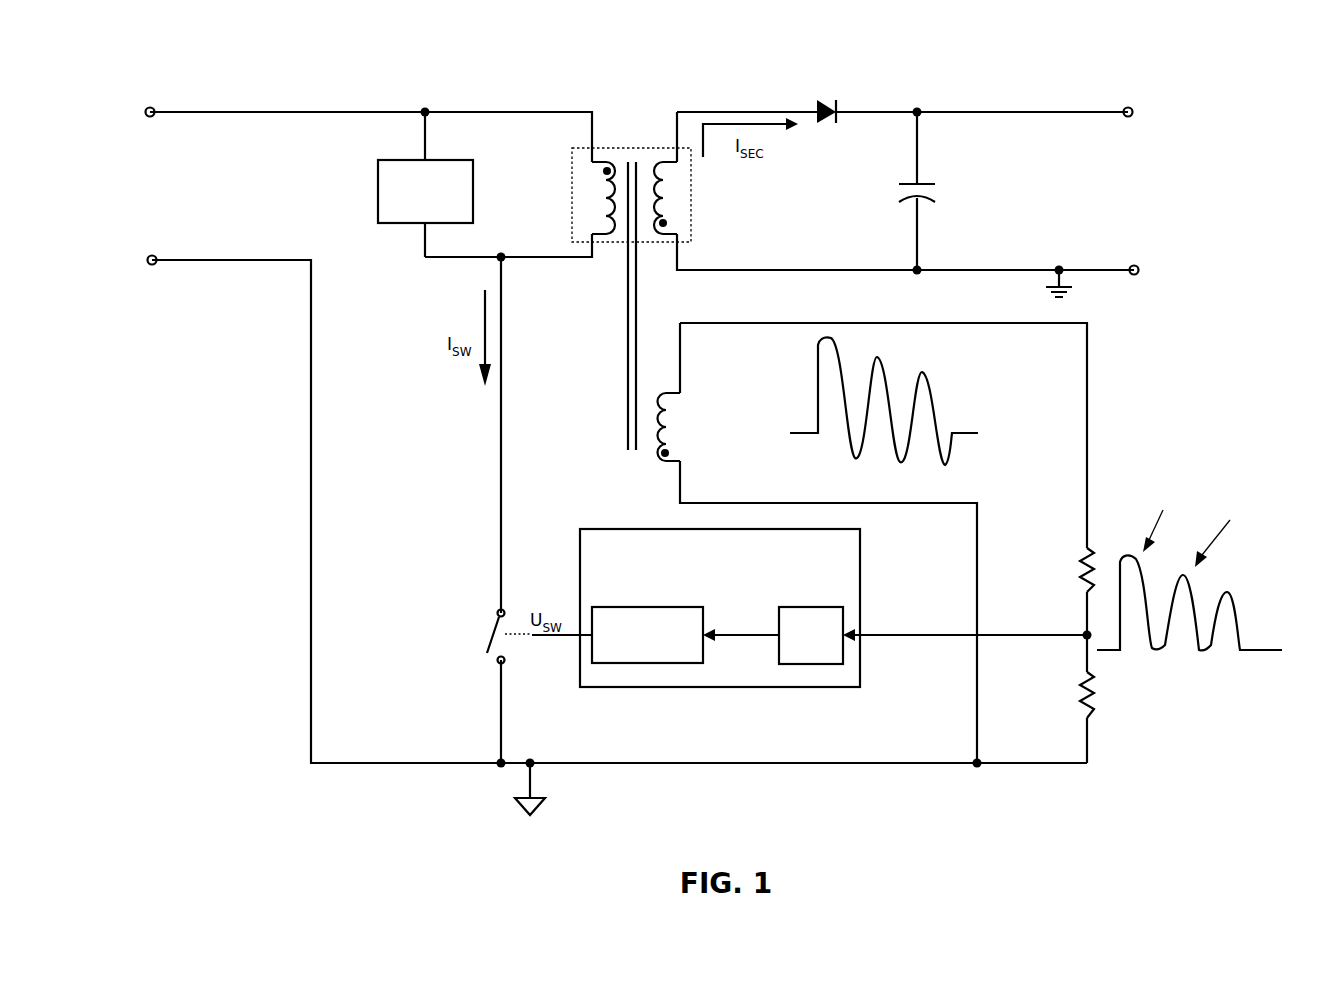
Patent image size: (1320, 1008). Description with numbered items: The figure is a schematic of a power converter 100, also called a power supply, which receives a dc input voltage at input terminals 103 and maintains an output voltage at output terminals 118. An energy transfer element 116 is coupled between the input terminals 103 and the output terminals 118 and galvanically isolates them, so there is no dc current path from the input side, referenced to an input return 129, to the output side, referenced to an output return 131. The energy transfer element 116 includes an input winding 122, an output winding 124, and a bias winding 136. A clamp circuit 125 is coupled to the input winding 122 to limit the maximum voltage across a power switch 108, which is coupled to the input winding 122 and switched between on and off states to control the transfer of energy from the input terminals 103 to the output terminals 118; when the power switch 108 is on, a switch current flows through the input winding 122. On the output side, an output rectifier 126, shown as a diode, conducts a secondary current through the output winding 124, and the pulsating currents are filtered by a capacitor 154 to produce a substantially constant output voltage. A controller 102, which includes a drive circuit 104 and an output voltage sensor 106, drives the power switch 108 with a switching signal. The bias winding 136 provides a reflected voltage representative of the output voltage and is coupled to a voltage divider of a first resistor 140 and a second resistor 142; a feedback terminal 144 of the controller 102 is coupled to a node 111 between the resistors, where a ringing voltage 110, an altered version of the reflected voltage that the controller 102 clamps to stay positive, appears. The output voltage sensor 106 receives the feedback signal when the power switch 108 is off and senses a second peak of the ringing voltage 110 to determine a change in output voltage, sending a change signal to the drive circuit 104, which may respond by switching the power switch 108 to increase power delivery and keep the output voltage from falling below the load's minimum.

The power converter 100 is at (622, 71).
The controller 102 is at (598, 526).
The input terminals 103 is at (147, 119).
The drive circuit 104 is at (643, 665).
The output voltage sensor (OVS) 106 is at (785, 666).
The power switch 108 is at (482, 634).
The ringing voltage 110 is at (1130, 645).
The node 111 is at (1080, 631).
The energy transfer element 116 is at (630, 146).
The output terminals 118 is at (1133, 122).
The input winding 122 is at (598, 197).
The output winding 124 is at (683, 205).
The clamp circuit 125 is at (475, 170).
The output rectifier 126 is at (825, 95).
The input return 129 is at (522, 786).
The output return 131 is at (1046, 288).
The bias winding 136 is at (662, 465).
The first resistor 140 is at (1073, 560).
The second resistor 142 is at (1073, 688).
The feedback terminal 144 is at (878, 645).
The capacitor 154 is at (937, 186).